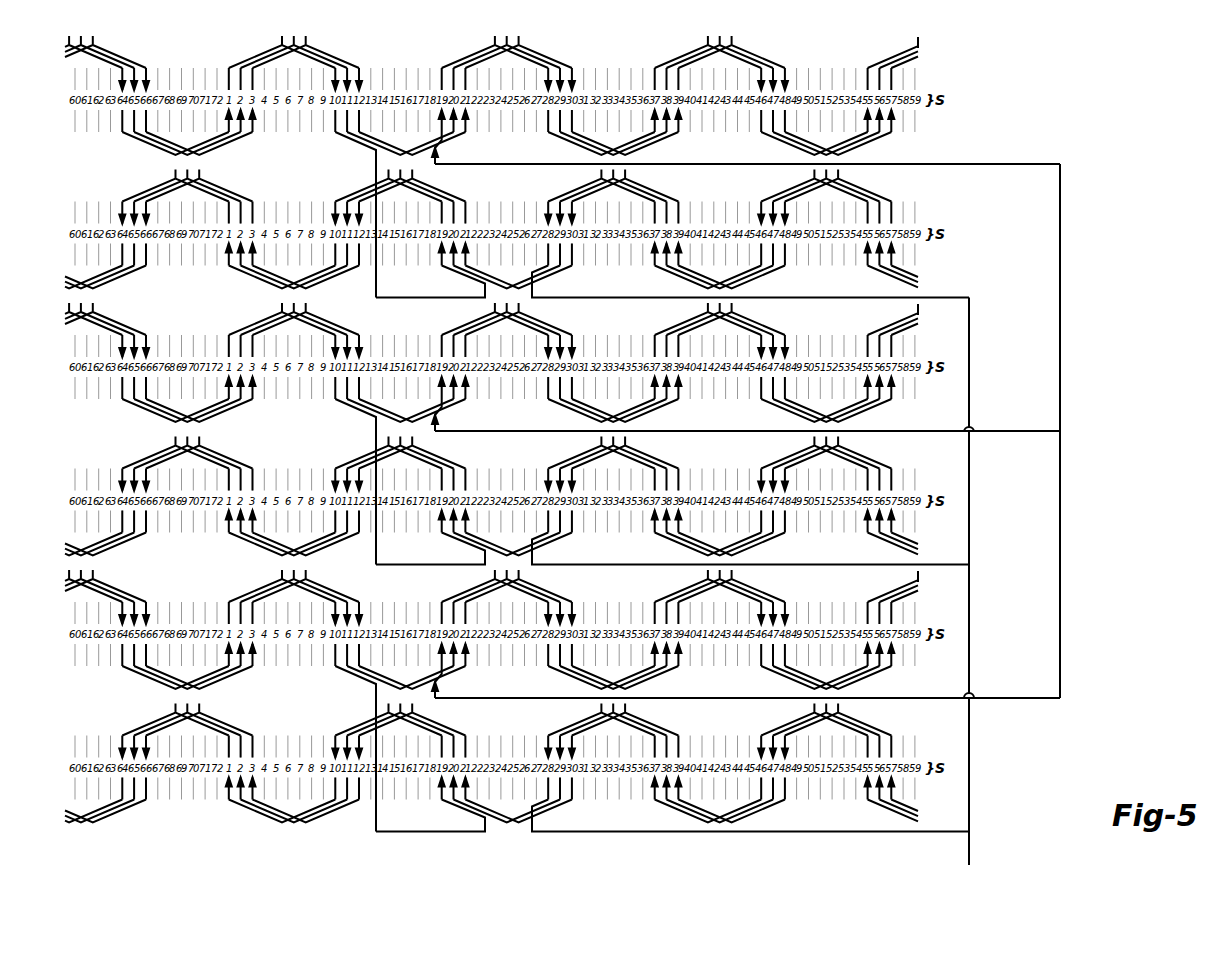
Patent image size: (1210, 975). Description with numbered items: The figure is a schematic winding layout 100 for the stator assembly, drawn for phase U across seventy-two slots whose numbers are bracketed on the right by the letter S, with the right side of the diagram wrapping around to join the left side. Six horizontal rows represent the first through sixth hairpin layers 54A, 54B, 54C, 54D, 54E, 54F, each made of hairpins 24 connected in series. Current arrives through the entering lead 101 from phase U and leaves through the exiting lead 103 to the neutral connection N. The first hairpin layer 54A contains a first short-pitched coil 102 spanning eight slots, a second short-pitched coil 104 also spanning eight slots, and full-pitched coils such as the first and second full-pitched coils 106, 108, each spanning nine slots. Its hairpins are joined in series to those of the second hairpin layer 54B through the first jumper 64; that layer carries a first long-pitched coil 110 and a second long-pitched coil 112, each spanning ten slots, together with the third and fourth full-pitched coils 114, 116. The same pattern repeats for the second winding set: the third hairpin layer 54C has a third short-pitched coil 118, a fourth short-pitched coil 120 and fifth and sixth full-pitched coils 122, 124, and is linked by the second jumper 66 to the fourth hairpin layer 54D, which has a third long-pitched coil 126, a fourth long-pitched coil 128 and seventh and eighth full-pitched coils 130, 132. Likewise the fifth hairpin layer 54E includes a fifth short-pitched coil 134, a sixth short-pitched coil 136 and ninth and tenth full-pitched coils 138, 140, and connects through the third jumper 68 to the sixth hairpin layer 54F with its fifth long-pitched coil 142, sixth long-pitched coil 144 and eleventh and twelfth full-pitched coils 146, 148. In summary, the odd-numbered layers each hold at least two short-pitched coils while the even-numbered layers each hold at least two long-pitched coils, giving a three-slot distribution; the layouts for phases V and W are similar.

The winding layout 100 is at (620, 450).
The first hairpin layer 54A is at (562, 167).
The second hairpin layer 54B is at (538, 246).
The third hairpin layer 54C is at (562, 434).
The fourth hairpin layer 54D is at (539, 513).
The fifth hairpin layer 54E is at (562, 701).
The sixth hairpin layer 54F is at (537, 780).
The entering lead 101 is at (1044, 164).
The exiting lead 103 is at (951, 297).
The hairpin 24 is at (572, 164).
The first short-pitched coil 102 is at (366, 143).
The second short-pitched coil 104 is at (376, 153).
The first full-pitched coil 106 is at (640, 150).
The second full-pitched coil 108 is at (858, 152).
The first long-pitched coil 110 is at (558, 284).
The second long-pitched coil 112 is at (540, 282).
The third full-pitched coil 114 is at (756, 284).
The fourth full-pitched coil 116 is at (322, 282).
The first jumper 64 is at (376, 280).
The third short-pitched coil 118 is at (372, 410).
The fourth short-pitched coil 120 is at (356, 406).
The fifth full-pitched coil 122 is at (660, 414).
The sixth full-pitched coil 124 is at (862, 418).
The third long-pitched coil 126 is at (556, 552).
The fourth long-pitched coil 128 is at (540, 549).
The seventh full-pitched coil 130 is at (756, 552).
The eighth full-pitched coil 132 is at (108, 552).
The second jumper 66 is at (376, 548).
The fifth short-pitched coil 134 is at (372, 677).
The sixth short-pitched coil 136 is at (356, 673).
The ninth full-pitched coil 138 is at (645, 681).
The tenth full-pitched coil 140 is at (858, 685).
The fifth long-pitched coil 142 is at (556, 819).
The sixth long-pitched coil 144 is at (540, 816).
The eleventh full-pitched coil 146 is at (756, 819).
The twelfth full-pitched coil 148 is at (110, 819).
The third jumper 68 is at (376, 815).